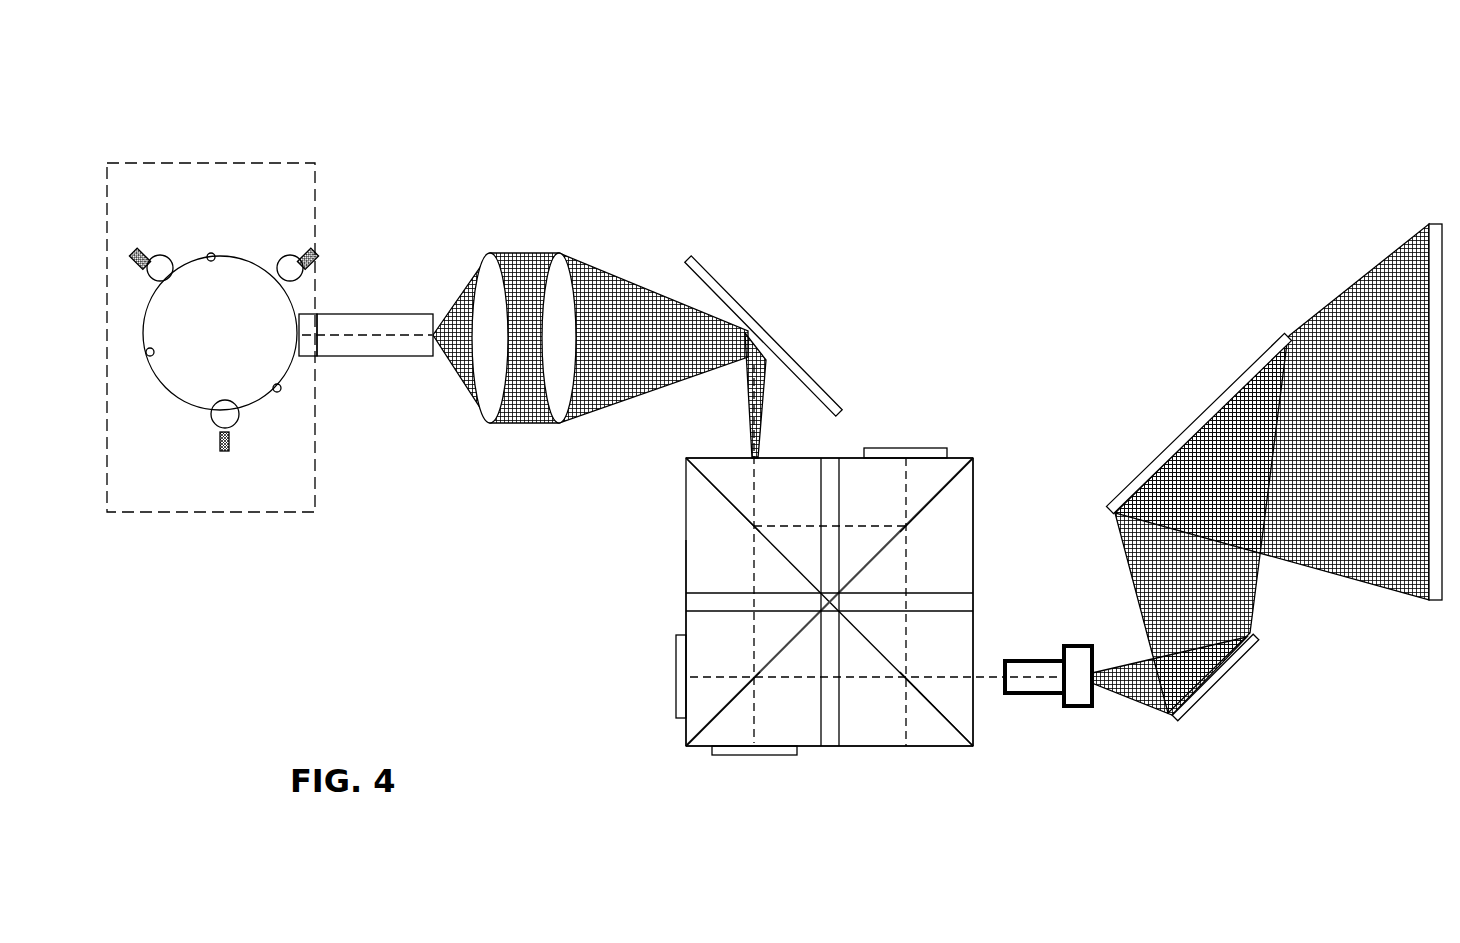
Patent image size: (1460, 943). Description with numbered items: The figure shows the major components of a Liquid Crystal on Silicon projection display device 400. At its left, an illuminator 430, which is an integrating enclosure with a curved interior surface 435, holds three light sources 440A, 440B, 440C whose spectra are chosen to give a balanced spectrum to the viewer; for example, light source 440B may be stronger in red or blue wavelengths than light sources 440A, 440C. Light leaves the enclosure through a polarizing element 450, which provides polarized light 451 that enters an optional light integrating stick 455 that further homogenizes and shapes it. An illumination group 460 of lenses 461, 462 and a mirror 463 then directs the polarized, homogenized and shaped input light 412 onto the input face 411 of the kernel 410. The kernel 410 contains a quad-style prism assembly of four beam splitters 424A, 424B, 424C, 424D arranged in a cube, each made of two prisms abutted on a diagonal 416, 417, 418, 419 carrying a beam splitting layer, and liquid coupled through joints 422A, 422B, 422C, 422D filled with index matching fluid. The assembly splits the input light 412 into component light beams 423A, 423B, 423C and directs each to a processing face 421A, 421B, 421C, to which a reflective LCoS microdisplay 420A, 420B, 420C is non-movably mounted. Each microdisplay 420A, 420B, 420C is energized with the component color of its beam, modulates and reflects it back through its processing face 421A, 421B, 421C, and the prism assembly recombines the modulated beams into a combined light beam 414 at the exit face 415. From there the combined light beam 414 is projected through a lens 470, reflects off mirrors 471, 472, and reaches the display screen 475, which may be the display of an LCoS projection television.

The LCoS projection display device 400 is at (866, 66).
The kernel 410 is at (568, 532).
The input face 411 is at (723, 455).
The input light 412 is at (746, 391).
The combined light beam 414 is at (992, 688).
The exit face 415 is at (974, 623).
The diagonal 416 is at (746, 514).
The diagonal 417 is at (937, 714).
The diagonal 418 is at (800, 625).
The diagonal 419 is at (973, 513).
The reflective LCoS microdisplay 420A is at (677, 684).
The reflective LCoS microdisplay 420B is at (737, 757).
The reflective LCoS microdisplay 420C is at (908, 447).
The processing face 421A is at (690, 716).
The processing face 421B is at (727, 737).
The processing face 421C is at (938, 465).
The joint 422A is at (694, 603).
The joint 422B is at (836, 748).
The joint 422C is at (972, 604).
The joint 422D is at (835, 457).
The component light beam 423A is at (707, 678).
The component light beam 423B is at (755, 708).
The component light beam 423C is at (874, 484).
The beam splitter 424A is at (807, 690).
The beam splitter 424B is at (947, 641).
The beam splitter 424C is at (956, 491).
The beam splitter 424D is at (700, 498).
The illuminator 430 is at (262, 163).
The curved interior surface 435 is at (211, 258).
The light source 440A is at (295, 255).
The light source 440B is at (153, 252).
The light source 440C is at (214, 444).
The polarizing element 450 is at (313, 312).
The polarized light 451 is at (394, 338).
The light integrating stick 455 is at (377, 313).
The illumination optics 460 is at (432, 177).
The lens 461 is at (487, 252).
The lens 462 is at (557, 252).
The mirror 463 is at (771, 326).
The lens 470 is at (1066, 707).
The mirror 471 is at (1218, 688).
The mirror 472 is at (1207, 401).
The display screen 475 is at (1436, 604).